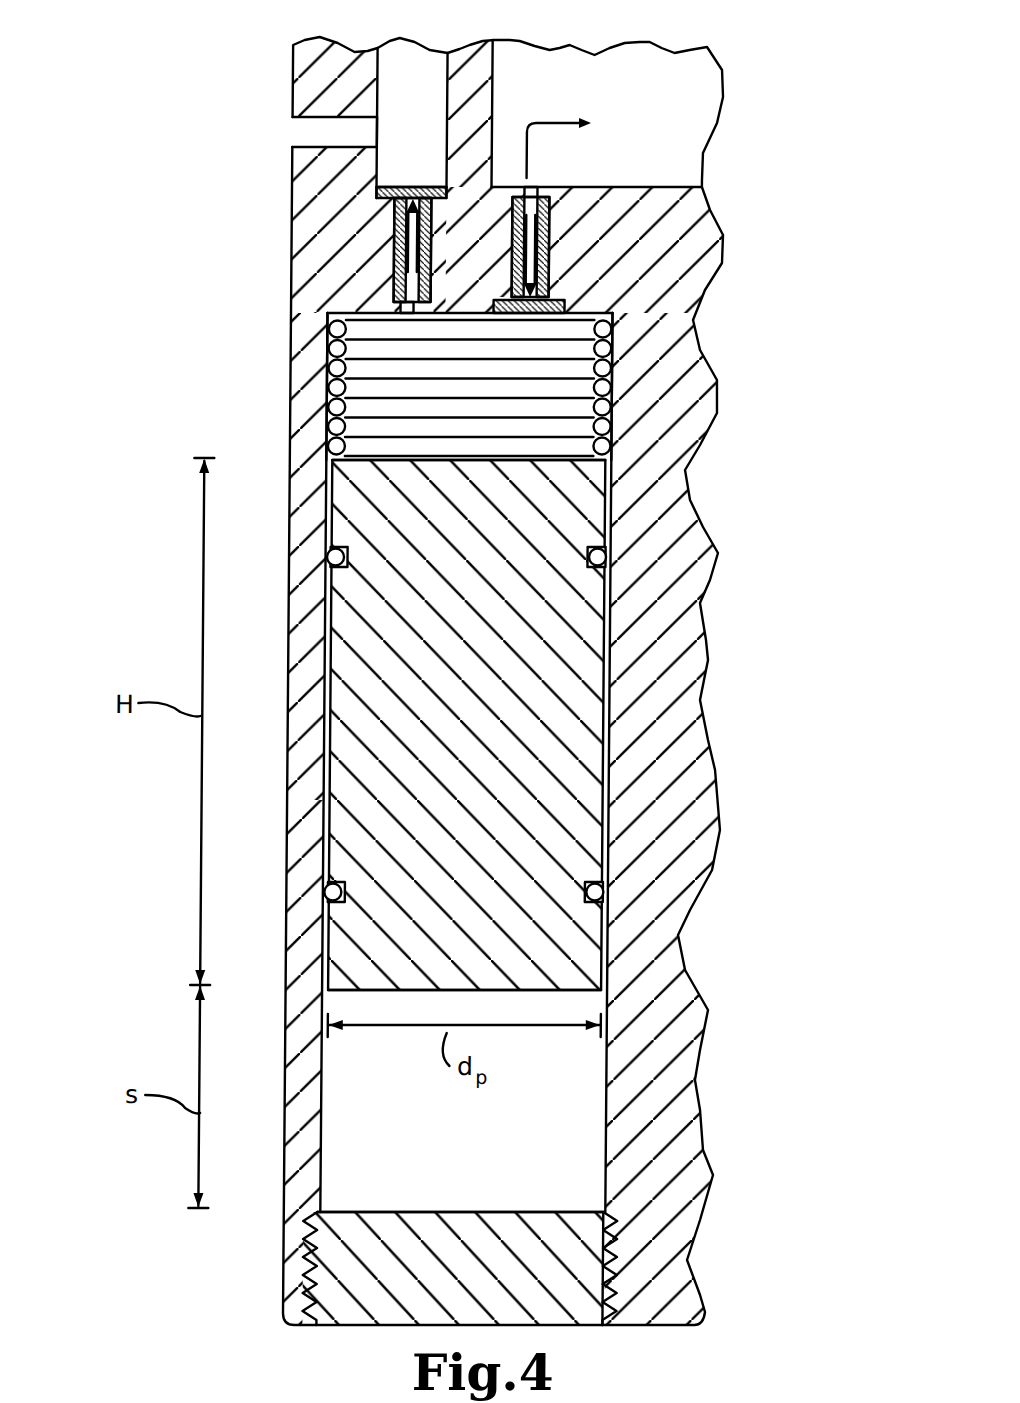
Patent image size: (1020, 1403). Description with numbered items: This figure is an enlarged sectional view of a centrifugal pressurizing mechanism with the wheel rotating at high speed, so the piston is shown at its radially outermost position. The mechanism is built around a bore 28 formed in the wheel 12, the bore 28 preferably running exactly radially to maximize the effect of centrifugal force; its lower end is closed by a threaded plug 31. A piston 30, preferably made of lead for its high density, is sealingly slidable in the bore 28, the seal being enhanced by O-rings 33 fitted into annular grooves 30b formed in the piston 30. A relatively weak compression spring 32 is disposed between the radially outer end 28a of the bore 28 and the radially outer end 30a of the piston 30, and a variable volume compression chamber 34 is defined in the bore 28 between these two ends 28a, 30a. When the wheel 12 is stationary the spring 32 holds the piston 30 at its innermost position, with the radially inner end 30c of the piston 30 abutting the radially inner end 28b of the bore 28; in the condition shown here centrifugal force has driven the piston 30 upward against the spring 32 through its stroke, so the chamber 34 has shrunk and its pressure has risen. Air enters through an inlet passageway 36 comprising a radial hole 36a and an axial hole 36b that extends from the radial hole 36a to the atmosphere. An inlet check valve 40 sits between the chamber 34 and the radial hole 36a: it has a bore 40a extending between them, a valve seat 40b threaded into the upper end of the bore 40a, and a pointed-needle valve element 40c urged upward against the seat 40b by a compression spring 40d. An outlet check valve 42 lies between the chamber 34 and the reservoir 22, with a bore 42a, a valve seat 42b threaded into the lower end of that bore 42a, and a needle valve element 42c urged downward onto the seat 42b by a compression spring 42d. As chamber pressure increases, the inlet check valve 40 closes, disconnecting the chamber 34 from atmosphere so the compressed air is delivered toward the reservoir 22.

The wheel 12 is at (673, 1058).
The reservoir 22 is at (652, 77).
The bore 28 is at (322, 1112).
The radially outer end of the bore 28a is at (344, 306).
The radially inner end of the bore 28b is at (357, 1205).
The piston 30 is at (354, 700).
The radially outer end of the piston 30a is at (397, 470).
The annular grooves 30b is at (343, 588).
The radially inner end of the piston 30c is at (343, 995).
The threaded plug 31 is at (366, 1312).
The compression spring 32 is at (368, 383).
The O-rings 33 is at (339, 557).
The variable volume compression chamber 34 is at (630, 401).
The inlet passageway 36 is at (262, 54).
The radial hole 36a is at (410, 58).
The axial hole 36b is at (308, 133).
The inlet check valve 40 is at (362, 238).
The bore of inlet check valve 40a is at (402, 259).
The valve seat of inlet check valve 40b is at (389, 192).
The valve element of inlet check valve 40c is at (396, 206).
The compression spring of inlet check valve 40d is at (400, 286).
The outlet check valve 42 is at (582, 247).
The bore of outlet check valve 42a is at (555, 223).
The valve seat of outlet check valve 42b is at (566, 308).
The valve element of outlet check valve 42c is at (555, 291).
The compression spring of outlet check valve 42d is at (549, 210).